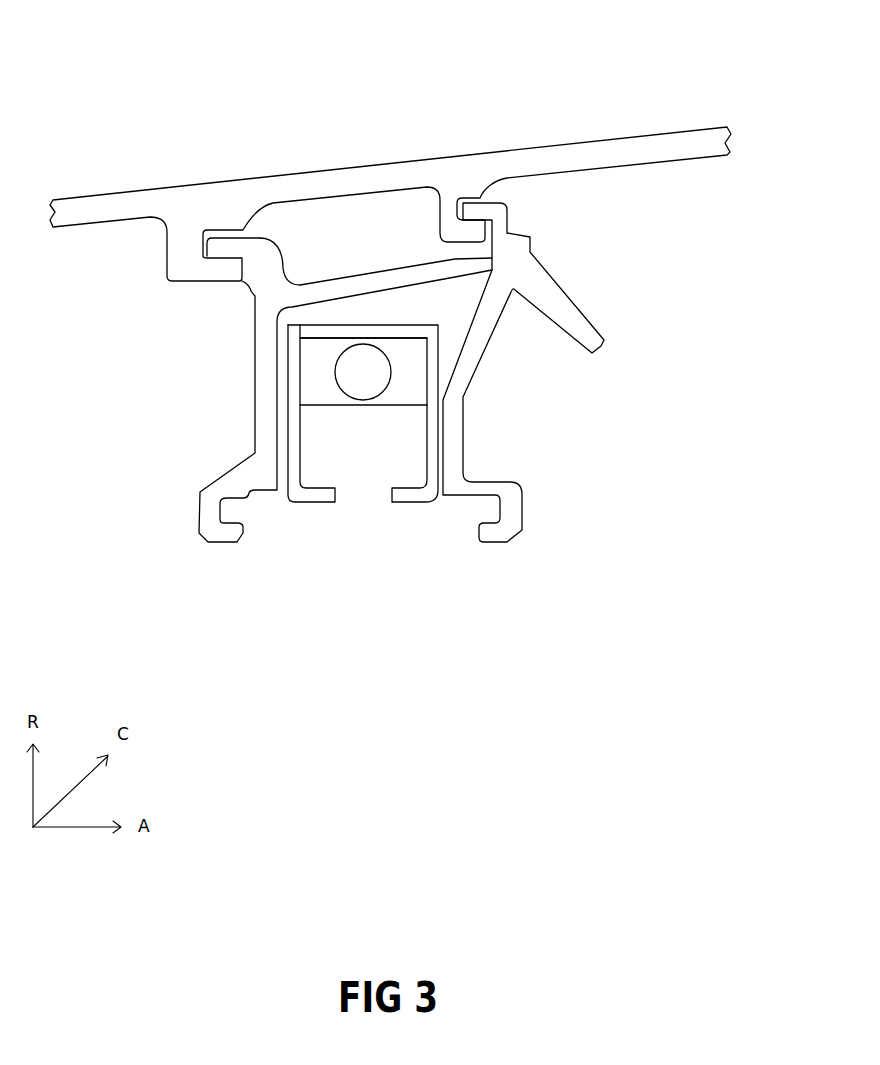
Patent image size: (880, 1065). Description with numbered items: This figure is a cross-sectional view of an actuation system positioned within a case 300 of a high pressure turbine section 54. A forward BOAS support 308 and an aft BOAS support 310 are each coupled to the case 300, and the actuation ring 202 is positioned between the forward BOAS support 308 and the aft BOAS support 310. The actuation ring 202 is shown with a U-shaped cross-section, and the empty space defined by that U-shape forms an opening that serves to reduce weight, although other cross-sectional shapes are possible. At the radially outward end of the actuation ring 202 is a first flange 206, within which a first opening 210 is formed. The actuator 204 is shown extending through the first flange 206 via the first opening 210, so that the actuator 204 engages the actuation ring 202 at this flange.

The high pressure turbine section 54 is at (201, 118).
The case 300 is at (595, 150).
The forward BOAS support 308 is at (267, 306).
The aft BOAS support 310 is at (490, 352).
The actuation ring 202 is at (293, 420).
The actuator 204 is at (357, 352).
The first flange 206 is at (328, 380).
The first opening 210 is at (347, 365).